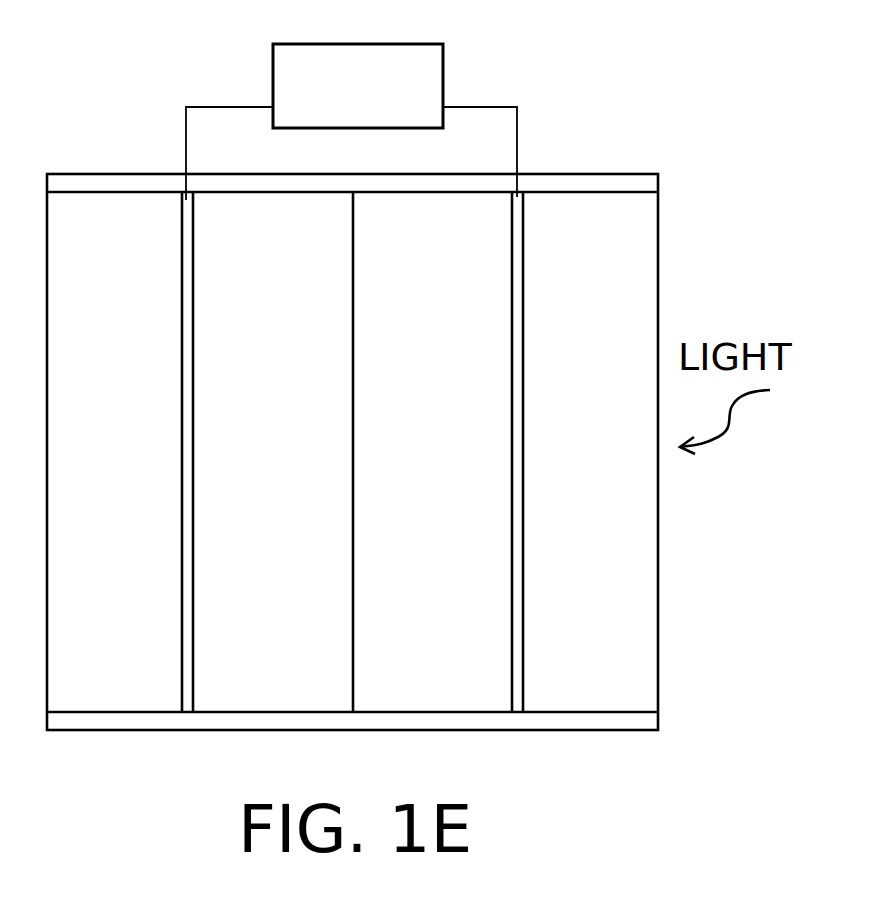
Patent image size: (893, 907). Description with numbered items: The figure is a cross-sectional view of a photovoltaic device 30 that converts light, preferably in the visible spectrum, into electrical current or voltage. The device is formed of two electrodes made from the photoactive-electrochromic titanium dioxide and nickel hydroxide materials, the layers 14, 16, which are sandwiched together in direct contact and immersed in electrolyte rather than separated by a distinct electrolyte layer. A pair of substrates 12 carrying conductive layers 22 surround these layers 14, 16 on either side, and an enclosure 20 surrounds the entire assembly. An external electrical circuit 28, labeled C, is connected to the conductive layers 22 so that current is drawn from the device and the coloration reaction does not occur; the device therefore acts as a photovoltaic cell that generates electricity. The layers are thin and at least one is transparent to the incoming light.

The substrate 12 is at (91, 323).
The TiO2 layer 14 is at (416, 320).
The Ni(OH)2 layer 16 is at (248, 322).
The enclosure 20 is at (568, 174).
The conductive layer 22 is at (190, 698).
The external electrical circuit 28 is at (427, 81).
The photovoltaic device 30 is at (404, 414).